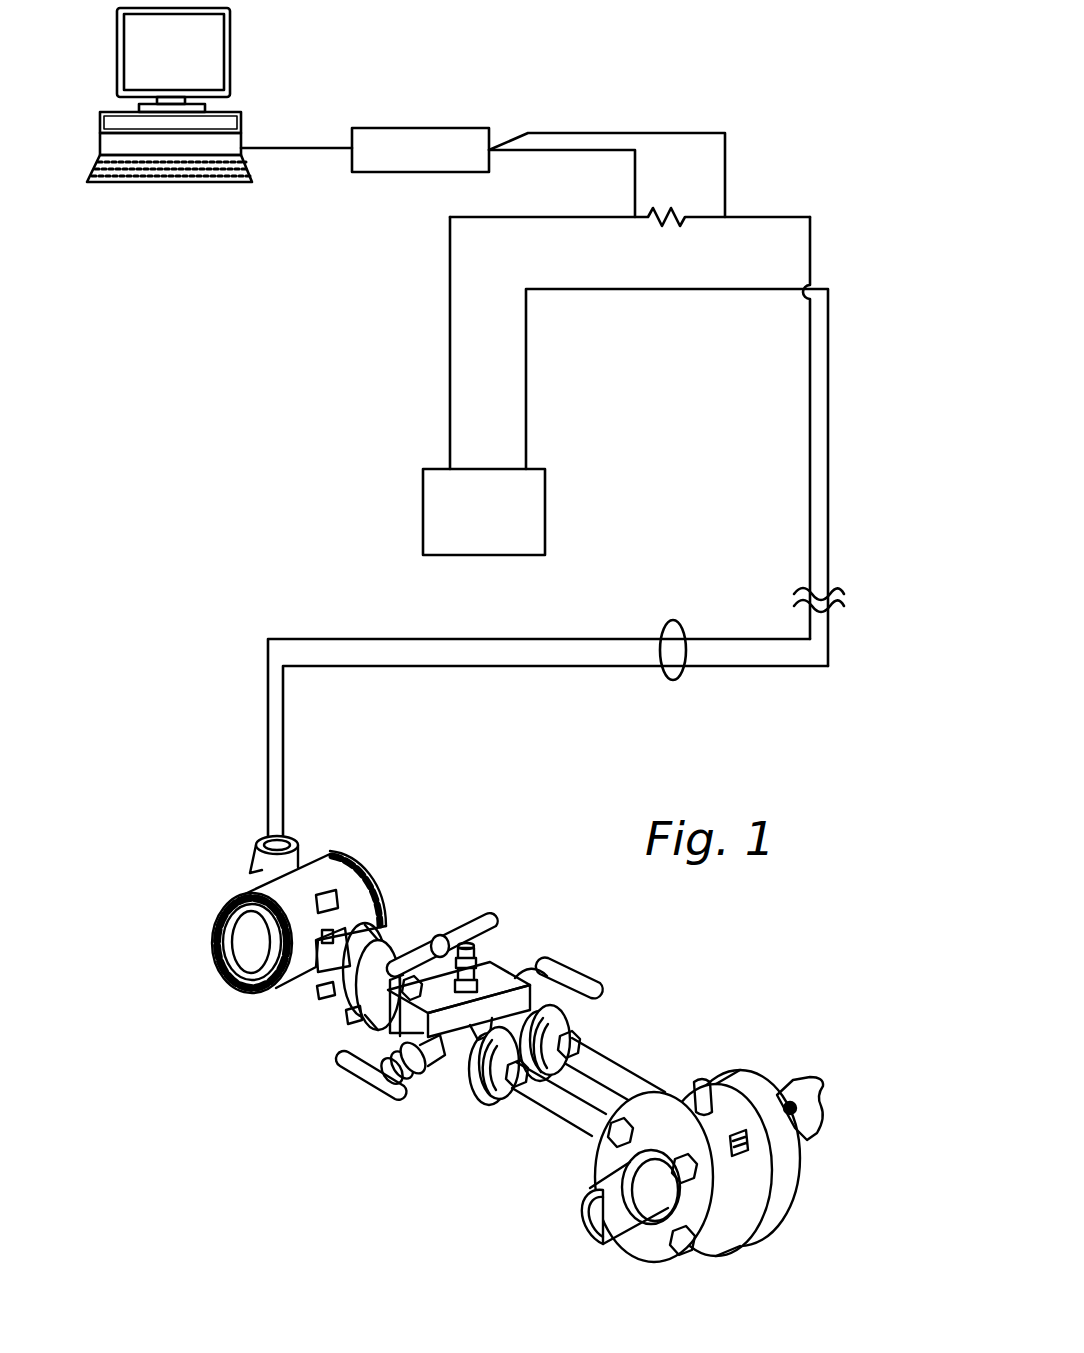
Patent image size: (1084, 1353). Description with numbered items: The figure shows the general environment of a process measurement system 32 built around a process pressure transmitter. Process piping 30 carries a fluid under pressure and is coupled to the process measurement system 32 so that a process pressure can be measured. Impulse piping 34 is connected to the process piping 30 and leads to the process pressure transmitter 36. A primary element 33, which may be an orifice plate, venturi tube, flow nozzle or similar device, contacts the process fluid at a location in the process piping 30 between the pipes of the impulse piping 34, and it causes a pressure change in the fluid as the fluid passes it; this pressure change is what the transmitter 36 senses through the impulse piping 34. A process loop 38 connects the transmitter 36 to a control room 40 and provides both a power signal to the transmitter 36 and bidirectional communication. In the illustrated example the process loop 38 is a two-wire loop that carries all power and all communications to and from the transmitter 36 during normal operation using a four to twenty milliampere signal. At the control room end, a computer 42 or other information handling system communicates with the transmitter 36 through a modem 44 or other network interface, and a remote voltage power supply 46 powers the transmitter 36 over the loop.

The process piping 30 is at (810, 1142).
The process measurement system 32 is at (652, 977).
The primary element 33 is at (757, 1220).
The impulse piping 34 is at (622, 1085).
The process pressure transmitter 36 is at (362, 853).
The process loop 38 is at (675, 680).
The control room 40 is at (344, 361).
The computer 42 is at (243, 122).
The modem 44 is at (422, 128).
The remote voltage power supply 46 is at (455, 555).